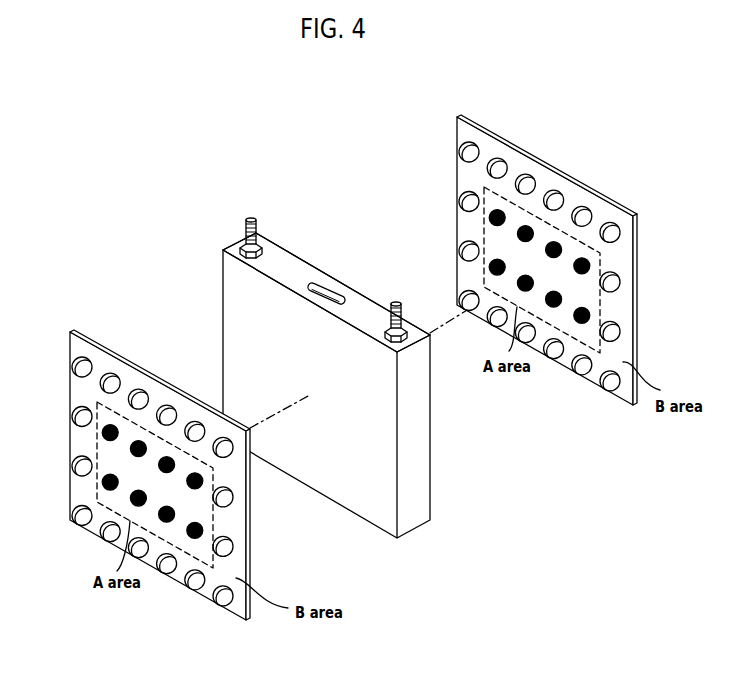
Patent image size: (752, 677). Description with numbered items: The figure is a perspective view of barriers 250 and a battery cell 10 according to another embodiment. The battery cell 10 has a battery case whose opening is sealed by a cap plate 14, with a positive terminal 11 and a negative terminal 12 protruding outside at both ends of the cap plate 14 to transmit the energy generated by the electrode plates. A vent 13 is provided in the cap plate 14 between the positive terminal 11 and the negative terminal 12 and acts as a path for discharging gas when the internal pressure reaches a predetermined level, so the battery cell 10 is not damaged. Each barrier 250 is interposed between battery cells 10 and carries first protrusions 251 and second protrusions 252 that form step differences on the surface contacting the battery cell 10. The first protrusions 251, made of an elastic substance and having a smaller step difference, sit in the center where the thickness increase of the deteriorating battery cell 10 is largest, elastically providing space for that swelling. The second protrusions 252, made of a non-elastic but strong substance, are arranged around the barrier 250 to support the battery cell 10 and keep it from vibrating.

The battery cell 10 is at (232, 236).
The positive terminal 11 is at (253, 216).
The negative terminal 12 is at (395, 300).
The vent 13 is at (318, 286).
The cap plate 14 is at (278, 258).
The barrier 250 is at (68, 323).
The first protrusions 251 is at (103, 435).
The second protrusions 252 is at (74, 368).